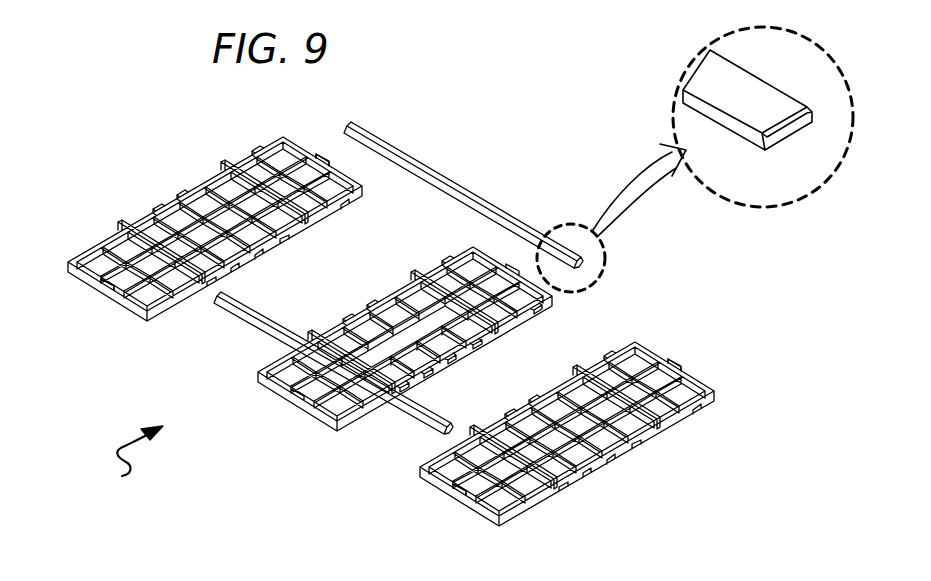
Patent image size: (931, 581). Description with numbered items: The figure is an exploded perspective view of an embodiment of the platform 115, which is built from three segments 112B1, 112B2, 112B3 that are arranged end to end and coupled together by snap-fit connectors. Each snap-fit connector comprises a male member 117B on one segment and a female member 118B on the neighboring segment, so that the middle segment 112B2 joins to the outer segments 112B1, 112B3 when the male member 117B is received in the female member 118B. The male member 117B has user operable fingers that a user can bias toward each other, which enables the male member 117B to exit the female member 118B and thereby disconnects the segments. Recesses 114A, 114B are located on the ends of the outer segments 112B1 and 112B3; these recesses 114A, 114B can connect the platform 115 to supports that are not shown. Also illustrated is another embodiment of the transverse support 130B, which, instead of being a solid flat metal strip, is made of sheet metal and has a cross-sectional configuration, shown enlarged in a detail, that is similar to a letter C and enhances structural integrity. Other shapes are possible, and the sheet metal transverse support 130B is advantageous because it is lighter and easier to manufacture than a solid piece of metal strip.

The segment 112B1 is at (185, 200).
The segment 112B2 is at (432, 347).
The segment 112B3 is at (510, 434).
The recess 114A is at (113, 289).
The recess 114B is at (326, 165).
The transverse support 130B is at (405, 152).
The male member 117B is at (464, 352).
The female member 118B is at (520, 412).
The platform 115 is at (122, 460).